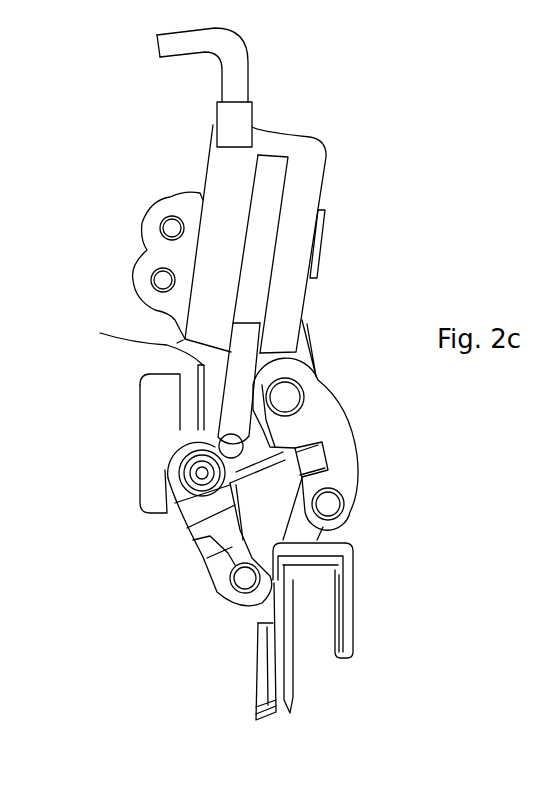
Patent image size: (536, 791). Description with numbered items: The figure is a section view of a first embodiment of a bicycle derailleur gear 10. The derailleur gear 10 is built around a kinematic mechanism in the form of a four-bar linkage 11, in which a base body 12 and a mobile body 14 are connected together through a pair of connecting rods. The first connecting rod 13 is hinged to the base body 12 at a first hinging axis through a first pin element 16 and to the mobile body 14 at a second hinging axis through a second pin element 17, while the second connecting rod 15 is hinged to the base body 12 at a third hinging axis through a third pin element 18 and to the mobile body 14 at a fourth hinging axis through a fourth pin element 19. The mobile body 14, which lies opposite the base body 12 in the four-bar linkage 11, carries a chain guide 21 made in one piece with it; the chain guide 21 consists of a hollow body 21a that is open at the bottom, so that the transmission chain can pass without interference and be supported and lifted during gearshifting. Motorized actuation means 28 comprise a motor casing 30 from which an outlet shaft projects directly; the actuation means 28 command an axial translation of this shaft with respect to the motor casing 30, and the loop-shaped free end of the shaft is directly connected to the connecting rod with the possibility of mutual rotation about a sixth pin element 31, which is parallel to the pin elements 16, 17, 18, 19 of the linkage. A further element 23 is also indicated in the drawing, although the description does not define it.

The bicycle derailleur gear 10 is at (110, 228).
The four-bar linkage 11 is at (367, 413).
The base body 12 is at (143, 390).
The first connecting rod 13 is at (342, 447).
The mobile body 14 is at (317, 532).
The second connecting rod 15 is at (203, 543).
The first pin element 16 is at (283, 395).
The second pin element 17 is at (328, 504).
The third pin element 18 is at (196, 473).
The fourth pin element 19 is at (243, 582).
The chain guide 21 is at (317, 663).
The hollow body 21a is at (353, 594).
The spring 23 is at (177, 343).
The actuation means 28 is at (343, 167).
The motor casing 30 is at (300, 133).
The sixth pin element 31 is at (215, 426).